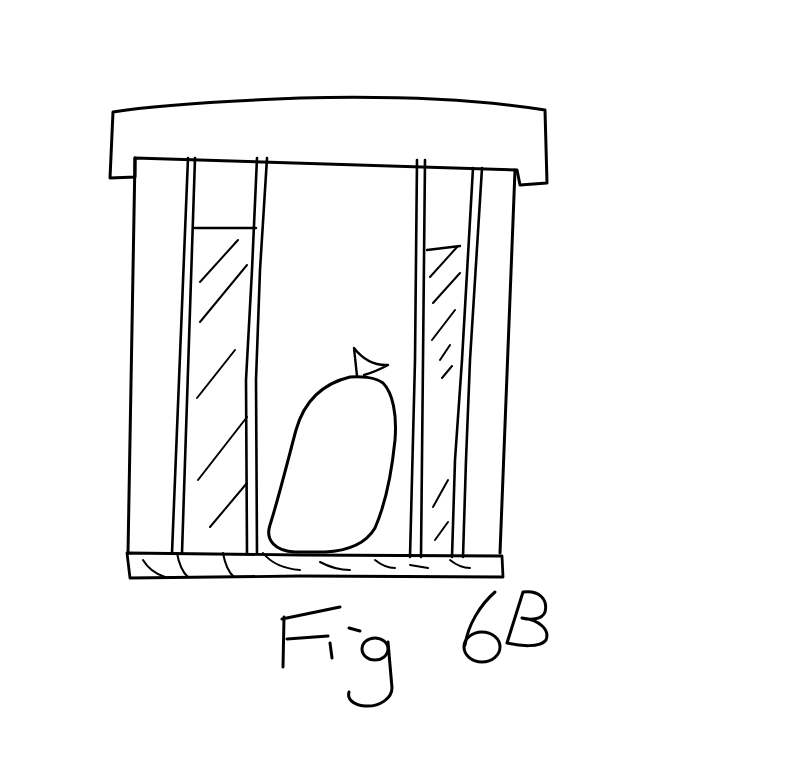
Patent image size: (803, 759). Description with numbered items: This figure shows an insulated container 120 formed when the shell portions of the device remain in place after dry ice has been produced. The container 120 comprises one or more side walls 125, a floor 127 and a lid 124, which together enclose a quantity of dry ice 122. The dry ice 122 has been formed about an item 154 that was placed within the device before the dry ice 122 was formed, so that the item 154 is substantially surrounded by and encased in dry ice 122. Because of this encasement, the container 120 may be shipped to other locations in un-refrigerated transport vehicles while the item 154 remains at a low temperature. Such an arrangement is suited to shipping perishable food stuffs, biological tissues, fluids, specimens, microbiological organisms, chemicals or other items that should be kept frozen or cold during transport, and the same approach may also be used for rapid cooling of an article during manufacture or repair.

The insulated container 120 is at (417, 367).
The dry ice 122 is at (440, 352).
The lid 124 is at (505, 120).
The side wall 125 is at (483, 437).
The floor 127 is at (143, 568).
The item 154 is at (280, 523).